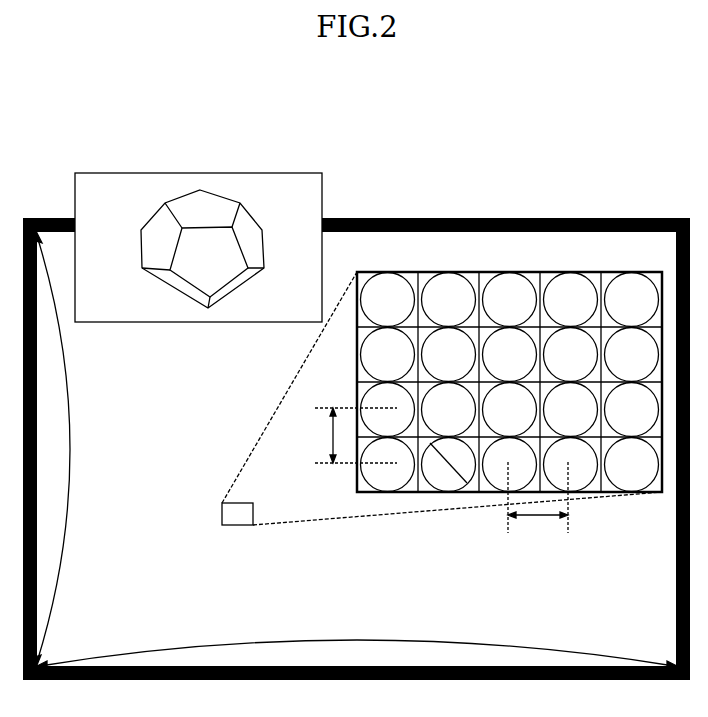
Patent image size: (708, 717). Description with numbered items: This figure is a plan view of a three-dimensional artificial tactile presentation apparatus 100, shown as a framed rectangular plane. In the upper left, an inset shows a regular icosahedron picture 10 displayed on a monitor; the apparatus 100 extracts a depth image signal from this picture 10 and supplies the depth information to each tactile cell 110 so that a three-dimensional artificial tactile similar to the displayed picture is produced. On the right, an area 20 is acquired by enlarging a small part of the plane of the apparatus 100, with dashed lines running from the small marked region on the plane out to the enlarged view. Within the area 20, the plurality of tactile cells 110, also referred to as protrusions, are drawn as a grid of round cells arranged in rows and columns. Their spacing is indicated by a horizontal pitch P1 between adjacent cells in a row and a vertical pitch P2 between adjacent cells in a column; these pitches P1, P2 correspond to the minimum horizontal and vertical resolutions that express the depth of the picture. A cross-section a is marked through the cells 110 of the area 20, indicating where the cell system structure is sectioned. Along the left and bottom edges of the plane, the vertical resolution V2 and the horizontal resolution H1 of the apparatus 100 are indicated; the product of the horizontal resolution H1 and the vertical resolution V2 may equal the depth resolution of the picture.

The regular icosahedron picture 10 is at (197, 173).
The 3D artificial tactile presentation apparatus 100 is at (495, 218).
The area 20 is at (568, 272).
The tactile cell 110 is at (445, 484).
The cross-section a is at (410, 428).
The horizontal pitch P1 is at (538, 499).
The vertical pitch P2 is at (353, 435).
The horizontal resolution H1 is at (357, 643).
The vertical resolution V2 is at (64, 449).